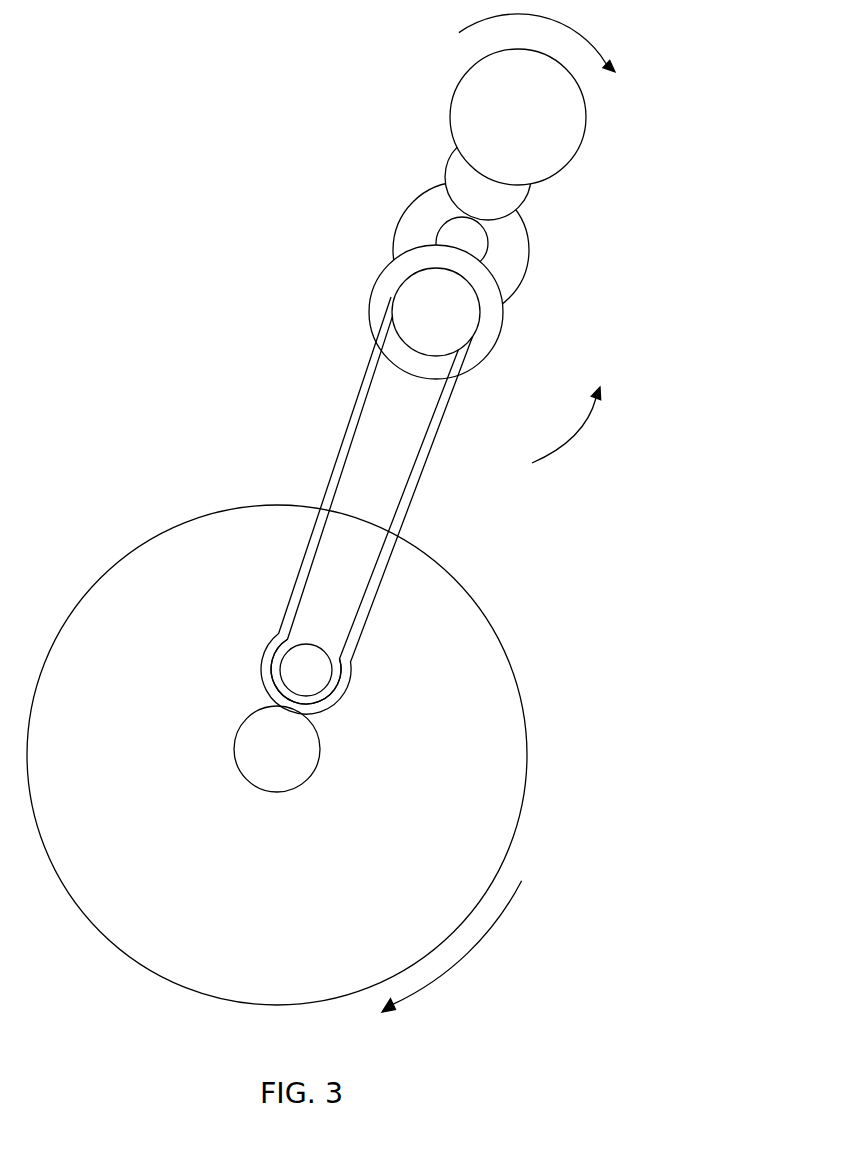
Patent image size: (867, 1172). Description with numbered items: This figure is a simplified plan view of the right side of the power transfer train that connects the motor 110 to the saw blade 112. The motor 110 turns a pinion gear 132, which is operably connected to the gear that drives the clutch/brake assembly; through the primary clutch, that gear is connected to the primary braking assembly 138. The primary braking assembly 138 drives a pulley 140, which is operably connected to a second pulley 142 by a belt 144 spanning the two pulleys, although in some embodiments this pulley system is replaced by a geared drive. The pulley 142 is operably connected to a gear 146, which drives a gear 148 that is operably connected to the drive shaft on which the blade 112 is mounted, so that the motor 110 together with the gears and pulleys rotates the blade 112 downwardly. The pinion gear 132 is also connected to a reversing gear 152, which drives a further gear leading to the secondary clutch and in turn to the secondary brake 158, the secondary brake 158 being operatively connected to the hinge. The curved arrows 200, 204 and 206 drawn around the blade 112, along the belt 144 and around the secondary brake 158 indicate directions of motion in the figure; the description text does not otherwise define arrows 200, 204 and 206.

The motor 110 is at (405, 220).
The saw blade 112 is at (515, 777).
The pinion gear 132 is at (487, 239).
The primary braking assembly 138 is at (500, 338).
The pulley 140 is at (480, 310).
The pulley 142 is at (315, 657).
The belt 144 is at (444, 408).
The gear 146 is at (335, 695).
The gear 148 is at (322, 752).
The reversing gear 152 is at (450, 165).
The secondary brake 158 is at (578, 117).
The wheel rotation direction 200 is at (493, 932).
The link motion direction 204 is at (563, 438).
The roller rotation direction 206 is at (580, 38).